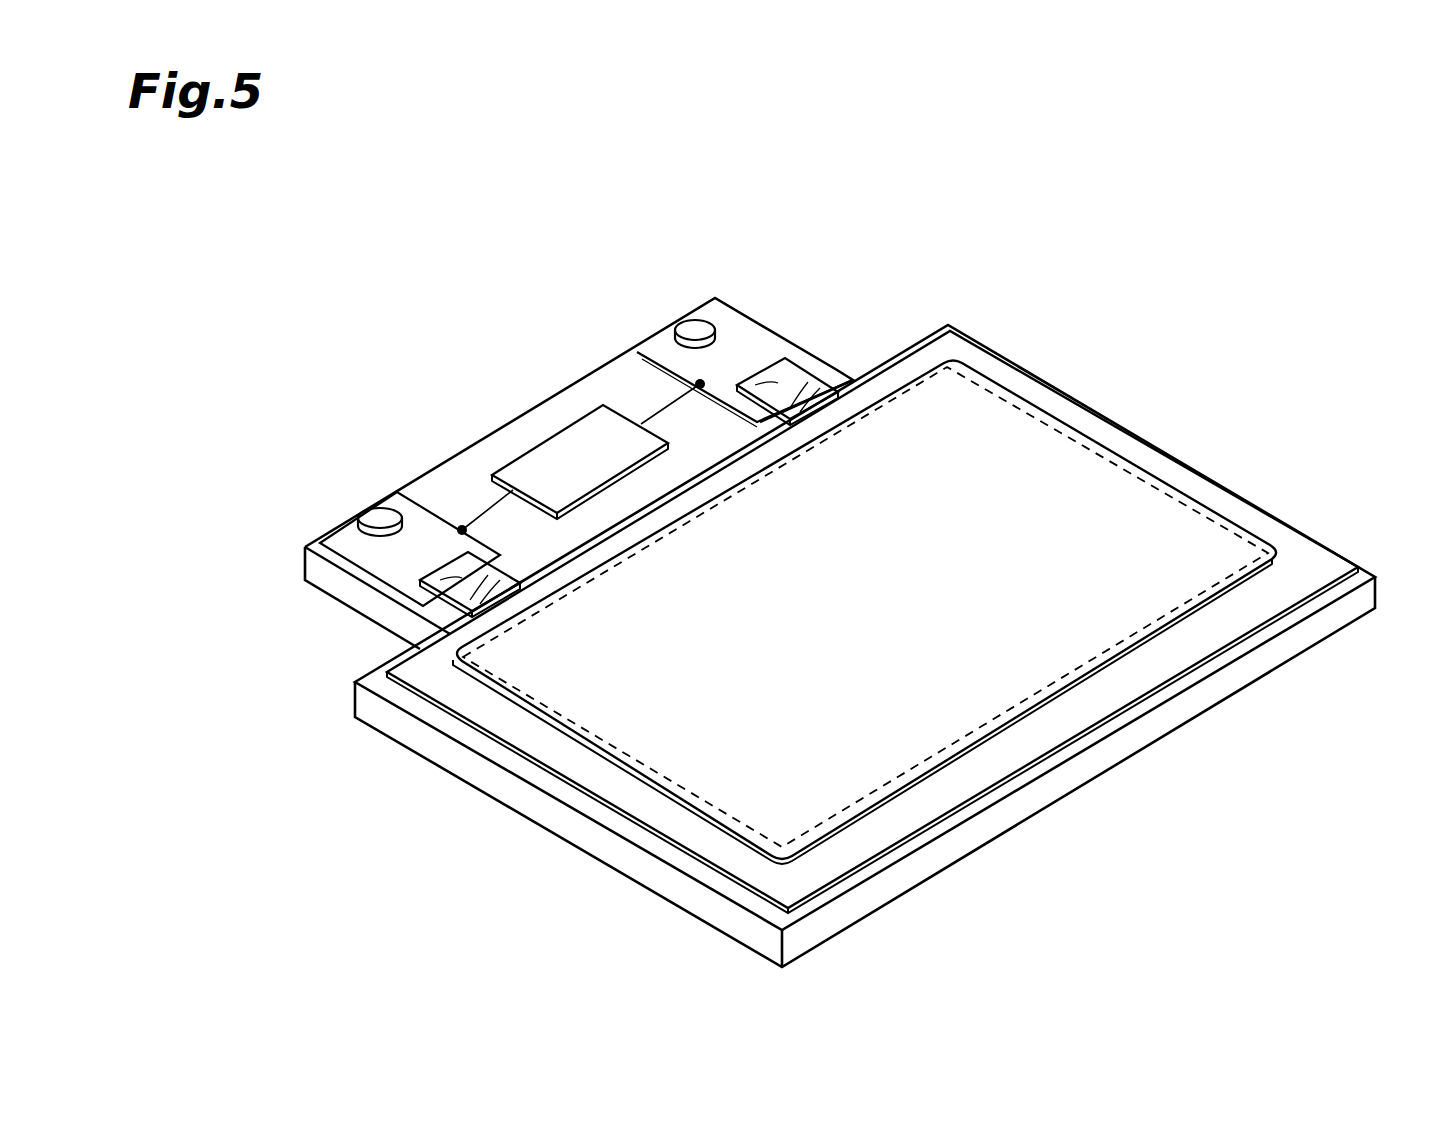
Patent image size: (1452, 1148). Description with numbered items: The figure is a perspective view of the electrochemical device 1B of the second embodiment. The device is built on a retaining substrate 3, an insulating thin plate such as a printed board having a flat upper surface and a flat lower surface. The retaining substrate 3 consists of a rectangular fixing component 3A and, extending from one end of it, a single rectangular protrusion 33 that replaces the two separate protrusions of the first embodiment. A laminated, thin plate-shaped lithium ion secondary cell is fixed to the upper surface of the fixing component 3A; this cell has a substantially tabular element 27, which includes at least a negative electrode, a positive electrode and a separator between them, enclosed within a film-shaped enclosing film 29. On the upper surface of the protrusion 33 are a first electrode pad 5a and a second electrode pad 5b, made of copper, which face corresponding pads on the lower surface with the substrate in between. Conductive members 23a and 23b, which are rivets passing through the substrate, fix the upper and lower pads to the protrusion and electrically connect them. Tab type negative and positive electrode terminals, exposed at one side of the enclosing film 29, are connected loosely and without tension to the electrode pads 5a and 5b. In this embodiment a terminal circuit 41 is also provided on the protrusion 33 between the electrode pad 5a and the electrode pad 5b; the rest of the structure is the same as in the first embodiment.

The electrochemical device 1B is at (1250, 319).
The retaining substrate 3 is at (980, 331).
The fixing component 3A is at (1366, 577).
The element 27 is at (1084, 431).
The enclosing film 29 is at (1154, 471).
The protrusion 33 is at (474, 440).
The electrode pad 5a is at (345, 527).
The electrode pad 5b is at (750, 318).
The conductive member 23a is at (380, 508).
The conductive member 23b is at (693, 318).
The terminal circuit 41 is at (590, 428).